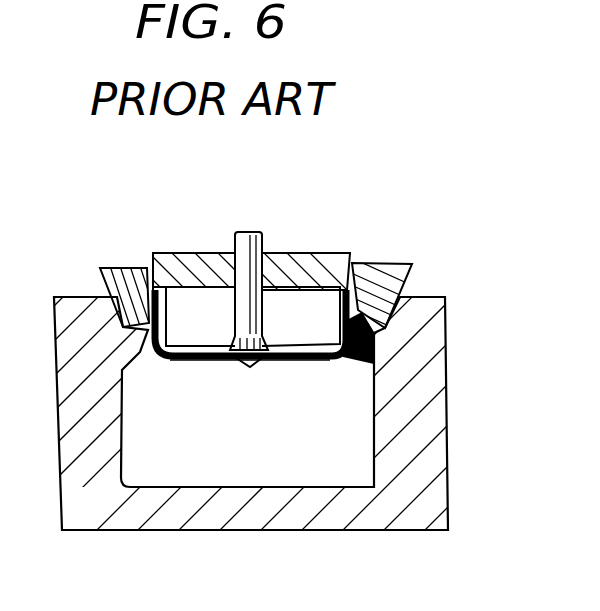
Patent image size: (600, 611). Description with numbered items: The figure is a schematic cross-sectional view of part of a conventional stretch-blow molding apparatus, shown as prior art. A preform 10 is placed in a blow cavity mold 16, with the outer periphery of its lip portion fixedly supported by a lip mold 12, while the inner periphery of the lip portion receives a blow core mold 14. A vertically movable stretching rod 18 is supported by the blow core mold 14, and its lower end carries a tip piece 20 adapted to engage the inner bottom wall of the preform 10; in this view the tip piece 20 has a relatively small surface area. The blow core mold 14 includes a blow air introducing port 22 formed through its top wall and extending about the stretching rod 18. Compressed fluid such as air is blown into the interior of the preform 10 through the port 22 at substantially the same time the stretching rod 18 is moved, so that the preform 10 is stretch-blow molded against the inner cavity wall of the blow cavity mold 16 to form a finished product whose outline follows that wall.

The preform 10 is at (300, 361).
The lip mold 12 is at (394, 276).
The blow core mold 14 is at (345, 272).
The blow cavity mold 16 is at (362, 513).
The stretching rod 18 is at (253, 318).
The tip piece 20 is at (235, 361).
The blow air introducing port 22 is at (231, 284).